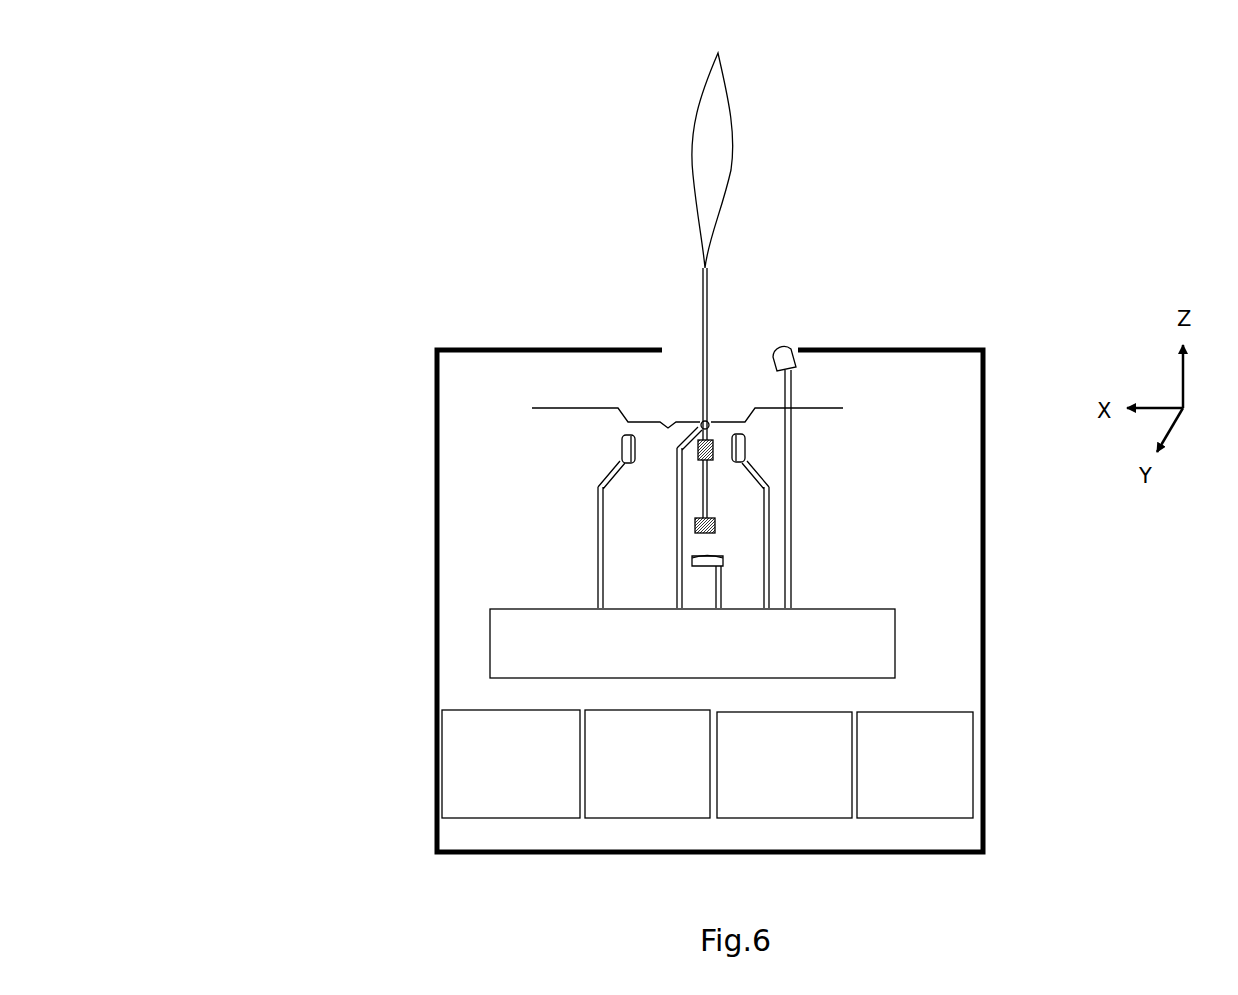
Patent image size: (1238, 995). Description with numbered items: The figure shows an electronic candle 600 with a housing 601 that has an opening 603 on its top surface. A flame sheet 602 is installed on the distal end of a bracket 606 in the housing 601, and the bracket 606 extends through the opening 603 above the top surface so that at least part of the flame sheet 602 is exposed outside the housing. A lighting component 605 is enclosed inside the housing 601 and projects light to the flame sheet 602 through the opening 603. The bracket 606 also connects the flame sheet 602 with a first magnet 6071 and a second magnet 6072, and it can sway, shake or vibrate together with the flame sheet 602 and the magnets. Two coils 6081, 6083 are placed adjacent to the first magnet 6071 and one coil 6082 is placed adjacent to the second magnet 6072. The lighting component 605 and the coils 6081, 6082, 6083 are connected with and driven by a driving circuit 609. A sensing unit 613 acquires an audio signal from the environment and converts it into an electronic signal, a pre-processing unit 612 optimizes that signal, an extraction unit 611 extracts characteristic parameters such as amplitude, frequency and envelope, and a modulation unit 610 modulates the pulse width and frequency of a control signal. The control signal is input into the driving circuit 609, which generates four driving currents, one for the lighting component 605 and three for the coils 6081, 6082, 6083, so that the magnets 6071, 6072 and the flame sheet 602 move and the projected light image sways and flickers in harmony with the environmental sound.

The electronic candle 600 is at (260, 94).
The housing 601 is at (503, 348).
The flame sheet 602 is at (732, 158).
The opening 603 is at (735, 330).
The lighting component 605 is at (780, 348).
The bracket 606 is at (707, 402).
The first magnet 6071 is at (687, 448).
The second magnet 6072 is at (715, 525).
The coil 6081 is at (620, 452).
The coil 6082 is at (723, 562).
The coil 6083 is at (745, 448).
The driving circuit 609 is at (692, 643).
The modulation unit 610 is at (511, 764).
The extraction unit 611 is at (647, 764).
The pre-processing unit 612 is at (785, 818).
The sensing unit 613 is at (915, 765).